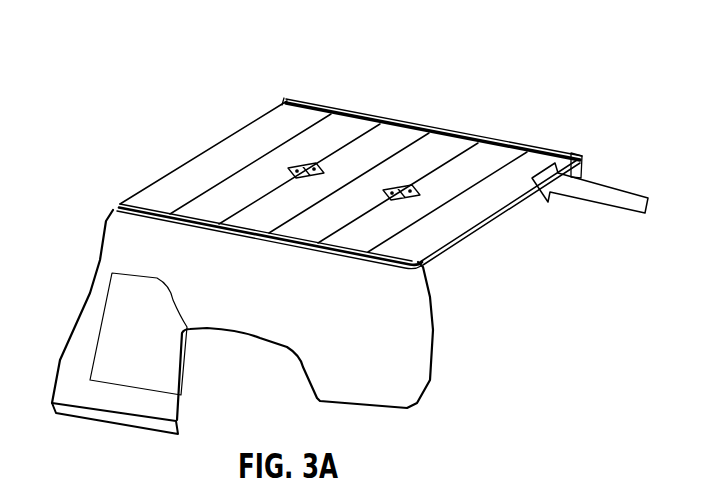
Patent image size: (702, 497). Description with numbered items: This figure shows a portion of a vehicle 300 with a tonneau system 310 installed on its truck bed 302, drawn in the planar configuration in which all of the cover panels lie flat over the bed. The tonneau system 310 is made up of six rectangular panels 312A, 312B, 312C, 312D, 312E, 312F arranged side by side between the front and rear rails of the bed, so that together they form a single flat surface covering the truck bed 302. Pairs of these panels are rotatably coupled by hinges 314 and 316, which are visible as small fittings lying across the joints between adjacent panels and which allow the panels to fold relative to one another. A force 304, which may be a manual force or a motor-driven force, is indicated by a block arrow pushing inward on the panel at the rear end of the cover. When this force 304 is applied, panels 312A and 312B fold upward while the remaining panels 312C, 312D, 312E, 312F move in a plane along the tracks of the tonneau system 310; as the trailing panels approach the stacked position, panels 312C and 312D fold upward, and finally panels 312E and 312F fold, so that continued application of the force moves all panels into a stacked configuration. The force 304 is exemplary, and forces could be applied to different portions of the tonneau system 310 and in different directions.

The vehicle 300 is at (603, 76).
The truck bed 302 is at (361, 329).
The force 304 is at (610, 193).
The tonneau system 310 is at (351, 151).
The rectangular panel 312A is at (300, 113).
The rectangular panel 312B is at (348, 133).
The rectangular panel 312C is at (397, 140).
The rectangular panel 312D is at (447, 148).
The rectangular panel 312E is at (497, 148).
The rectangular panel 312F is at (550, 152).
The hinge 314 is at (297, 167).
The hinge 316 is at (420, 193).